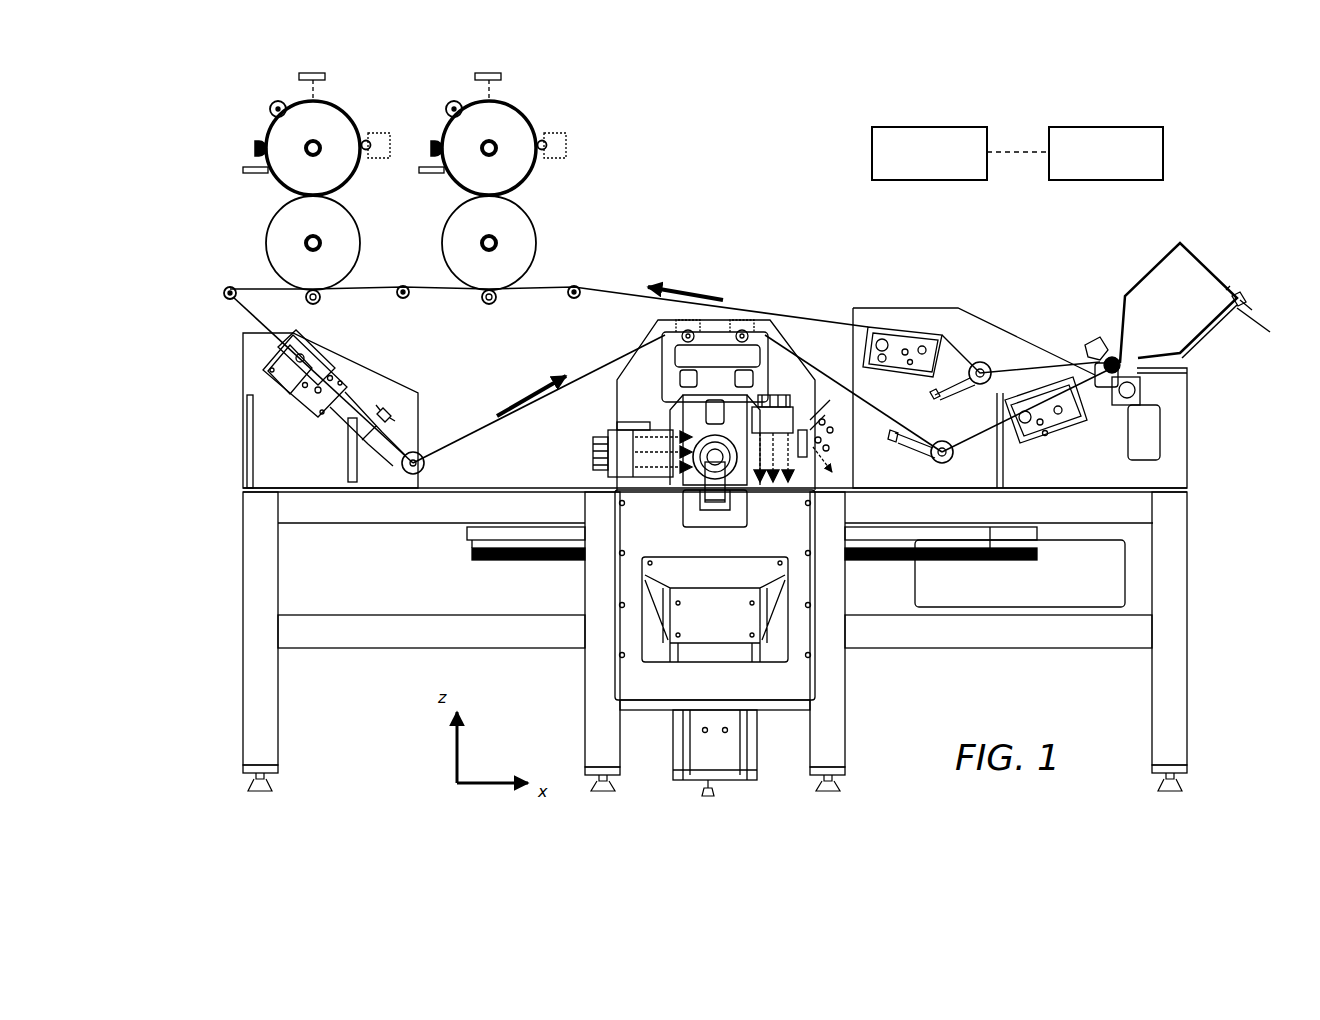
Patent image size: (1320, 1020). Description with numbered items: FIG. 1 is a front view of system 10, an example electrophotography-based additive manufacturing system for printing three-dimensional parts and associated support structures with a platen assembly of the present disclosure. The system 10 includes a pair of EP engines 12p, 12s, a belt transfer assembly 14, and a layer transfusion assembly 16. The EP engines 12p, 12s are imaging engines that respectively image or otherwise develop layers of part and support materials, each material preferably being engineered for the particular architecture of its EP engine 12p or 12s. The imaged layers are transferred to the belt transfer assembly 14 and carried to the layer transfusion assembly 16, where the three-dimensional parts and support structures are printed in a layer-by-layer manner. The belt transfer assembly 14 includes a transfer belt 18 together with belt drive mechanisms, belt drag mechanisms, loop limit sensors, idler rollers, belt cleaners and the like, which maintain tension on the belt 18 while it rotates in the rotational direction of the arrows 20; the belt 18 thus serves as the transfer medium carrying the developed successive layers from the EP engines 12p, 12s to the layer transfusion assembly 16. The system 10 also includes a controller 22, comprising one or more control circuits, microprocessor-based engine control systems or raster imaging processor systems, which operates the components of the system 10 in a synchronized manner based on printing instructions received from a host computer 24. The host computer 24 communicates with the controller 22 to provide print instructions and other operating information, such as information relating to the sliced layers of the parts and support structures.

The system 10 is at (222, 124).
The EP engine 12p is at (346, 93).
The EP engine 12s is at (530, 110).
The belt transfer assembly 14 is at (284, 421).
The layer transfusion assembly 16 is at (838, 229).
The transfer belt 18 is at (499, 440).
The arrows 20 is at (672, 291).
The controller 22 is at (955, 180).
The host computer 24 is at (1143, 180).